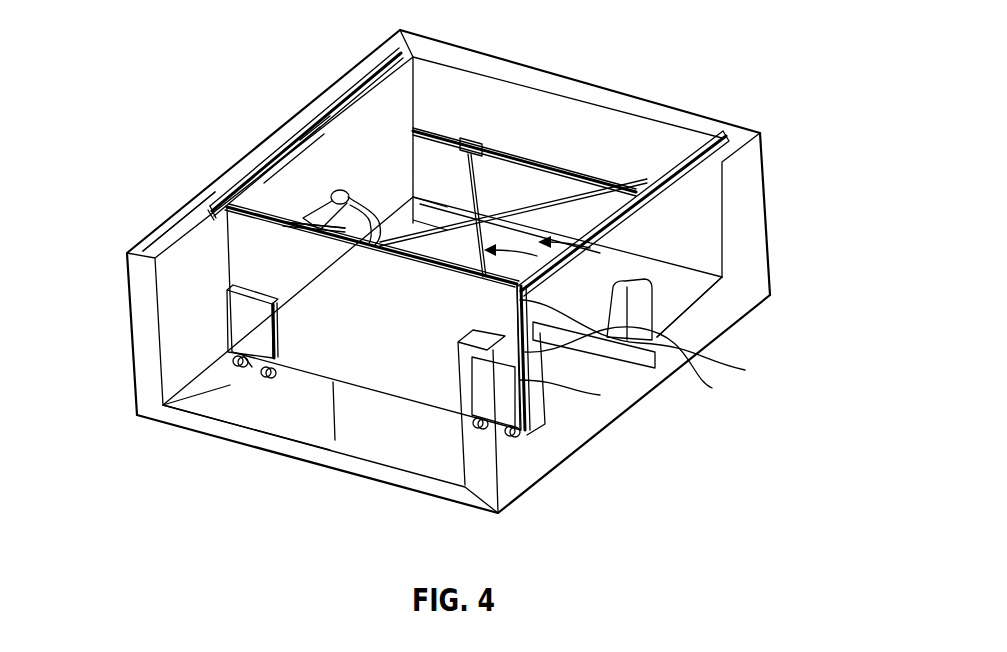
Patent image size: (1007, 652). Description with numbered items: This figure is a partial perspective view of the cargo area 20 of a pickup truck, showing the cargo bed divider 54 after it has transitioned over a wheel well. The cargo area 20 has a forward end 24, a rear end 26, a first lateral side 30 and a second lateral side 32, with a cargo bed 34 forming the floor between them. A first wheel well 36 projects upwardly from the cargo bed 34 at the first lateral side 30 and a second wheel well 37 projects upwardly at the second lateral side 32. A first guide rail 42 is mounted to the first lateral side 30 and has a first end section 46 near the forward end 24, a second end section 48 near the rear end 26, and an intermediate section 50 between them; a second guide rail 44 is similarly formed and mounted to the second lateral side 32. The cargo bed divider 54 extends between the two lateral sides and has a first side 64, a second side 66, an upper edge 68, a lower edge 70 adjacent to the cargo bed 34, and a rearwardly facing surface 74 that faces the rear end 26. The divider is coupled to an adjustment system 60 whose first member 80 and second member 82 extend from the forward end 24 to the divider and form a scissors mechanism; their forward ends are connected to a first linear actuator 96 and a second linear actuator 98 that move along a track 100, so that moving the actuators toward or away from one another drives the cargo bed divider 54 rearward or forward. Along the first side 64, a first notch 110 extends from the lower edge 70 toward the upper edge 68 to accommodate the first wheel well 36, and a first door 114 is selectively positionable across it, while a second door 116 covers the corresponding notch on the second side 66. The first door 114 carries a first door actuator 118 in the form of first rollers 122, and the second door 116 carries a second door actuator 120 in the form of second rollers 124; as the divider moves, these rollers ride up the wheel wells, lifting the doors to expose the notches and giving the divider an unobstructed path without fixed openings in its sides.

The cargo area 20 is at (416, 267).
The forward end 24 is at (432, 88).
The rear end 26 is at (172, 380).
The first lateral side 30 is at (318, 162).
The second lateral side 32 is at (400, 403).
The cargo bed 34 is at (247, 412).
The first wheel well 36 is at (297, 218).
The second wheel well 37 is at (665, 380).
The first guide rail 42 is at (318, 142).
The second guide rail 44 is at (592, 226).
The first end section 46 is at (385, 87).
The second end section 48 is at (215, 215).
The intermediate section 50 is at (305, 135).
The cargo bed divider 54 is at (383, 445).
The adjustment system 60 is at (707, 336).
The first side 64 is at (176, 226).
The second side 66 is at (600, 395).
The upper edge 68 is at (290, 228).
The lower edge 70 is at (330, 437).
The rearwardly facing surface 74 is at (352, 337).
The first member 80 is at (712, 362).
The second member 82 is at (459, 238).
The first linear actuator 96 is at (472, 142).
The second linear actuator 98 is at (638, 180).
The track 100 is at (542, 157).
The first notch 110 is at (247, 348).
The first door 114 is at (247, 317).
The second door 116 is at (505, 403).
The first door actuator 118 is at (268, 368).
The second door actuator 120 is at (526, 432).
The first rollers 122 is at (228, 368).
The second rollers 124 is at (463, 448).